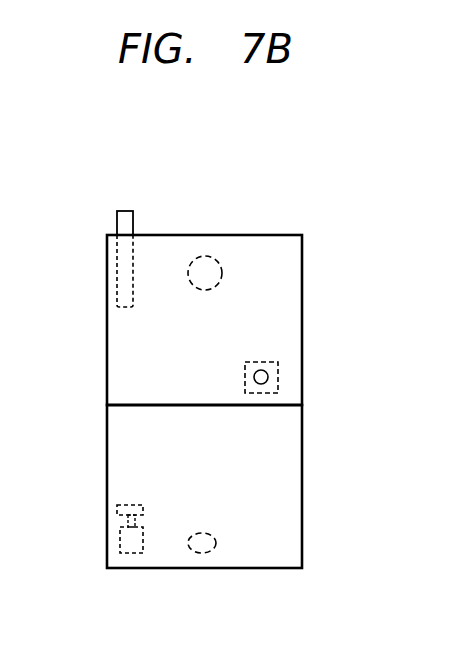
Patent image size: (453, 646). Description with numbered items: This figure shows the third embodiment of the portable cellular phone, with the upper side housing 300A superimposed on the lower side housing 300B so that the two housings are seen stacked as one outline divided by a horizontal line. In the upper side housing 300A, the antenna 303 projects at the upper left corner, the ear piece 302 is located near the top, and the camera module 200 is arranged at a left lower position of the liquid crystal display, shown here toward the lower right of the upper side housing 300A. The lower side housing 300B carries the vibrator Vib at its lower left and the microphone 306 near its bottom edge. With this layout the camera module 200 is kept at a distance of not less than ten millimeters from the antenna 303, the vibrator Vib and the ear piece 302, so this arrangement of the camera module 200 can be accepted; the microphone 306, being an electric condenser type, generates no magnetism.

The upper side housing 300A is at (303, 308).
The lower side housing 300B is at (303, 470).
The antenna 303 is at (125, 223).
The ear piece 302 is at (205, 265).
The camera module 200 is at (278, 375).
The vibrator Vib is at (120, 542).
The microphone 306 is at (196, 553).